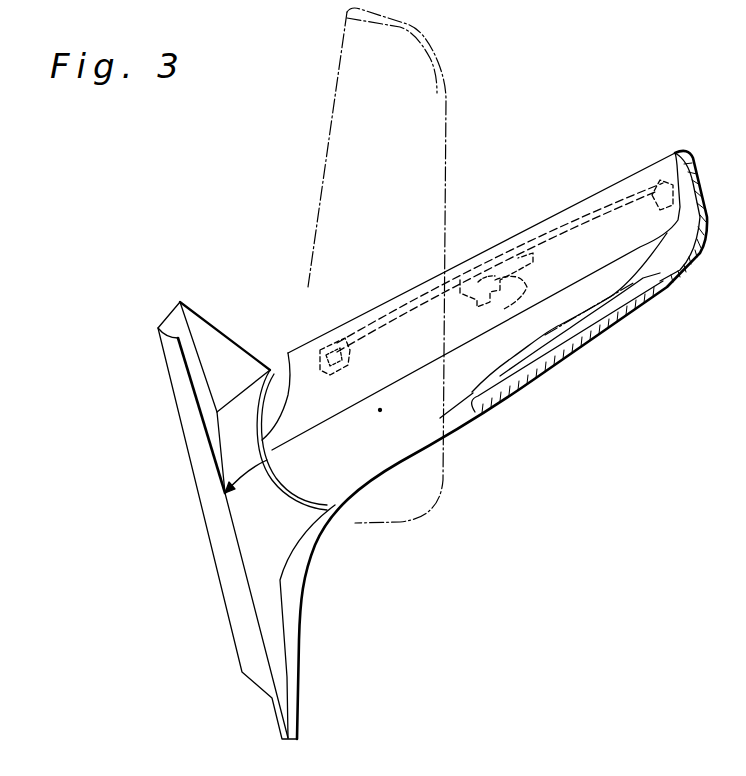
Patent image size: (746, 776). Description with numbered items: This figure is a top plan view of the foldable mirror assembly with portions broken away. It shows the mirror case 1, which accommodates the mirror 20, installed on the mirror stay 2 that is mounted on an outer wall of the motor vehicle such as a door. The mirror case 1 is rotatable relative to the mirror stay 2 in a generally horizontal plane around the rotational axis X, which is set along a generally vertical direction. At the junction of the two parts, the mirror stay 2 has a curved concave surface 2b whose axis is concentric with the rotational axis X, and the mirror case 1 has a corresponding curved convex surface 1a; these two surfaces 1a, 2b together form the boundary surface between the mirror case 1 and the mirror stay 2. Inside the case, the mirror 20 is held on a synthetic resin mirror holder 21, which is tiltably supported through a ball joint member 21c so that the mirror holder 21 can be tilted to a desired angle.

The mirror case 1 is at (327, 450).
The curved convex surface 1a is at (288, 353).
The mirror stay 2 is at (268, 529).
The curved concave surface 2b is at (258, 438).
The mirror 20 is at (600, 215).
The mirror holder 21 is at (366, 352).
The ball joint member 21c is at (494, 262).
The rotational axis X is at (380, 410).